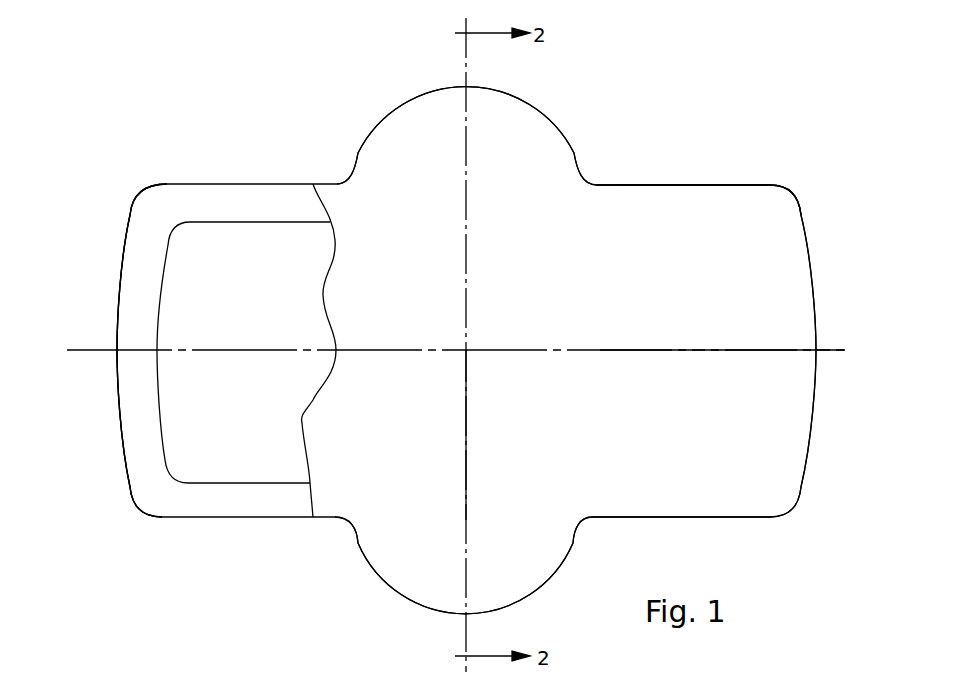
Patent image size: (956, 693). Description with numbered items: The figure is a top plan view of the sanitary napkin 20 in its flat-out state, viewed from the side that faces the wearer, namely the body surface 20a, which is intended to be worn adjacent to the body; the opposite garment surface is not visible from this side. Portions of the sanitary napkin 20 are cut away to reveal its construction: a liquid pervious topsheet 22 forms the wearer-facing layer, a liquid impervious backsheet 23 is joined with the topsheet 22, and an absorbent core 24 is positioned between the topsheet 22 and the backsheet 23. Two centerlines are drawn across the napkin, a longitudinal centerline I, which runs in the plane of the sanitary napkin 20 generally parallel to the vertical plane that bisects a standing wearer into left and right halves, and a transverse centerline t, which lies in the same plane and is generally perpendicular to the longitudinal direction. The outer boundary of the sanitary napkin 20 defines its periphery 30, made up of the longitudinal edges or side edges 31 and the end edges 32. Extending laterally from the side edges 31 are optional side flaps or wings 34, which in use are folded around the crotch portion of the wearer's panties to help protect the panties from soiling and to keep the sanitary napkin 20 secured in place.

The sanitary napkin 20 is at (218, 125).
The body surface 20a is at (710, 212).
The liquid pervious topsheet 22 is at (578, 212).
The liquid impervious backsheet 23 is at (148, 227).
The absorbent core 24 is at (222, 230).
The periphery 30 is at (678, 185).
The longitudinal edges 31 is at (657, 185).
The end edges 32 is at (800, 217).
The side flaps 34 is at (518, 117).
The longitudinal centerline I is at (773, 350).
The transverse centerline t is at (467, 418).